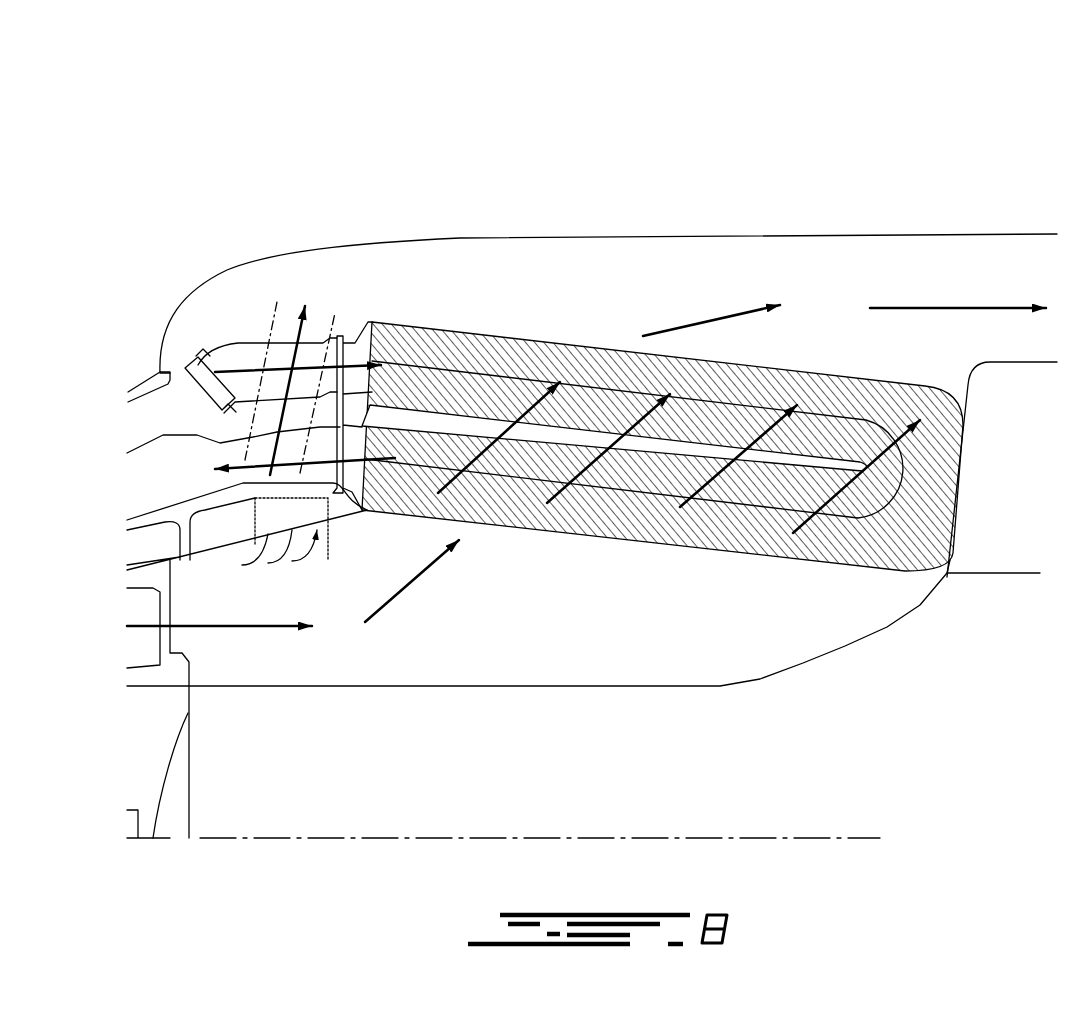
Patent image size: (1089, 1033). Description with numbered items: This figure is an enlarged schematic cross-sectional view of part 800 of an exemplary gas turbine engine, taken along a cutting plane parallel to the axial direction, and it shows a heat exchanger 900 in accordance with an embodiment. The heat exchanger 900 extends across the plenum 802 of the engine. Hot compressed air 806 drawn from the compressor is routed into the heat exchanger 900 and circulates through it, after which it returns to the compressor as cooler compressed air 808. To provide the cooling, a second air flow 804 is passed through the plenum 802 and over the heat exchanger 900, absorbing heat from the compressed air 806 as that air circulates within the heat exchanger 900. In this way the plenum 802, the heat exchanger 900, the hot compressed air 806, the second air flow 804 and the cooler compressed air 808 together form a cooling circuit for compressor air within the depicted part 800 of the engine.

The part 800 is at (740, 142).
The plenum 802 is at (548, 267).
The second air flow 804 is at (235, 627).
The hot compressed air 806 is at (247, 372).
The cooler compressed air 808 is at (292, 470).
The heat exchanger 900 is at (593, 558).